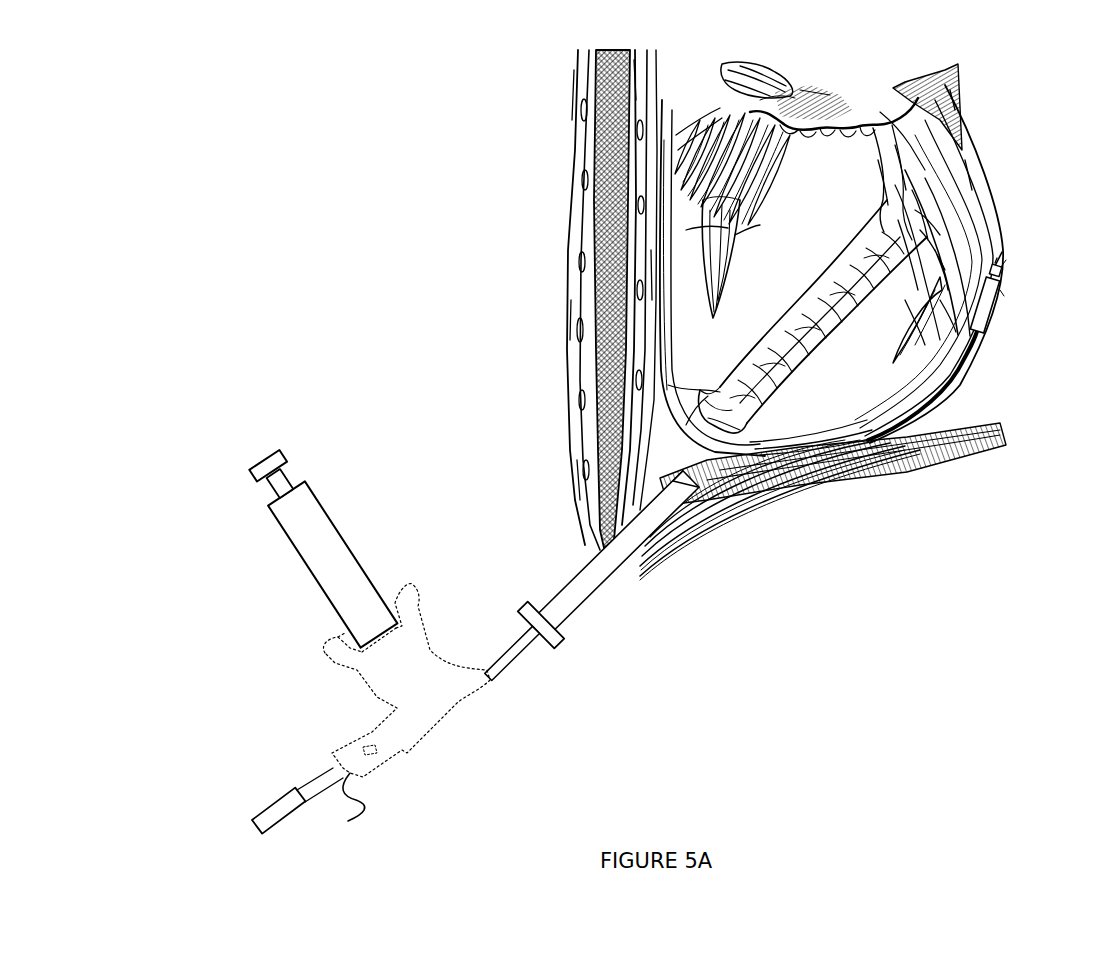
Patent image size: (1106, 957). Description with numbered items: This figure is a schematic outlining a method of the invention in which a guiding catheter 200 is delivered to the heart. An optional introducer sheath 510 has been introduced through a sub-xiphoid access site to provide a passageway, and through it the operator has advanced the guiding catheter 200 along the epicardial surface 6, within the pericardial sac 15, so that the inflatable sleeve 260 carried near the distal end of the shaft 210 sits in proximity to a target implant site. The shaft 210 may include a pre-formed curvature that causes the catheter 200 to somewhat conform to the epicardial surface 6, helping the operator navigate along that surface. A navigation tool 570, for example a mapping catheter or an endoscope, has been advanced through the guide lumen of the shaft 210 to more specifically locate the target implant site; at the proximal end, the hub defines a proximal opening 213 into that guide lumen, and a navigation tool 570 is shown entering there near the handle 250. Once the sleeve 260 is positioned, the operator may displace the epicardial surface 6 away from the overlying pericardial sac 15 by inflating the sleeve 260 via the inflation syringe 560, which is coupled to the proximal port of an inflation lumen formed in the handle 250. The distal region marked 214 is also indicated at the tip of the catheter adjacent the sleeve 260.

The epicardial surface 6 is at (988, 232).
The pericardial sac 15 is at (1008, 296).
The guiding catheter 200 is at (592, 611).
The shaft 210 is at (955, 388).
The proximal opening 213 is at (342, 806).
The distal tip 214 is at (1008, 280).
The handle 250 is at (411, 657).
The inflatable sleeve 260 is at (987, 305).
The introducer sheath 510 is at (591, 582).
The inflation syringe 560 is at (338, 480).
The navigation tool 570 is at (994, 260).